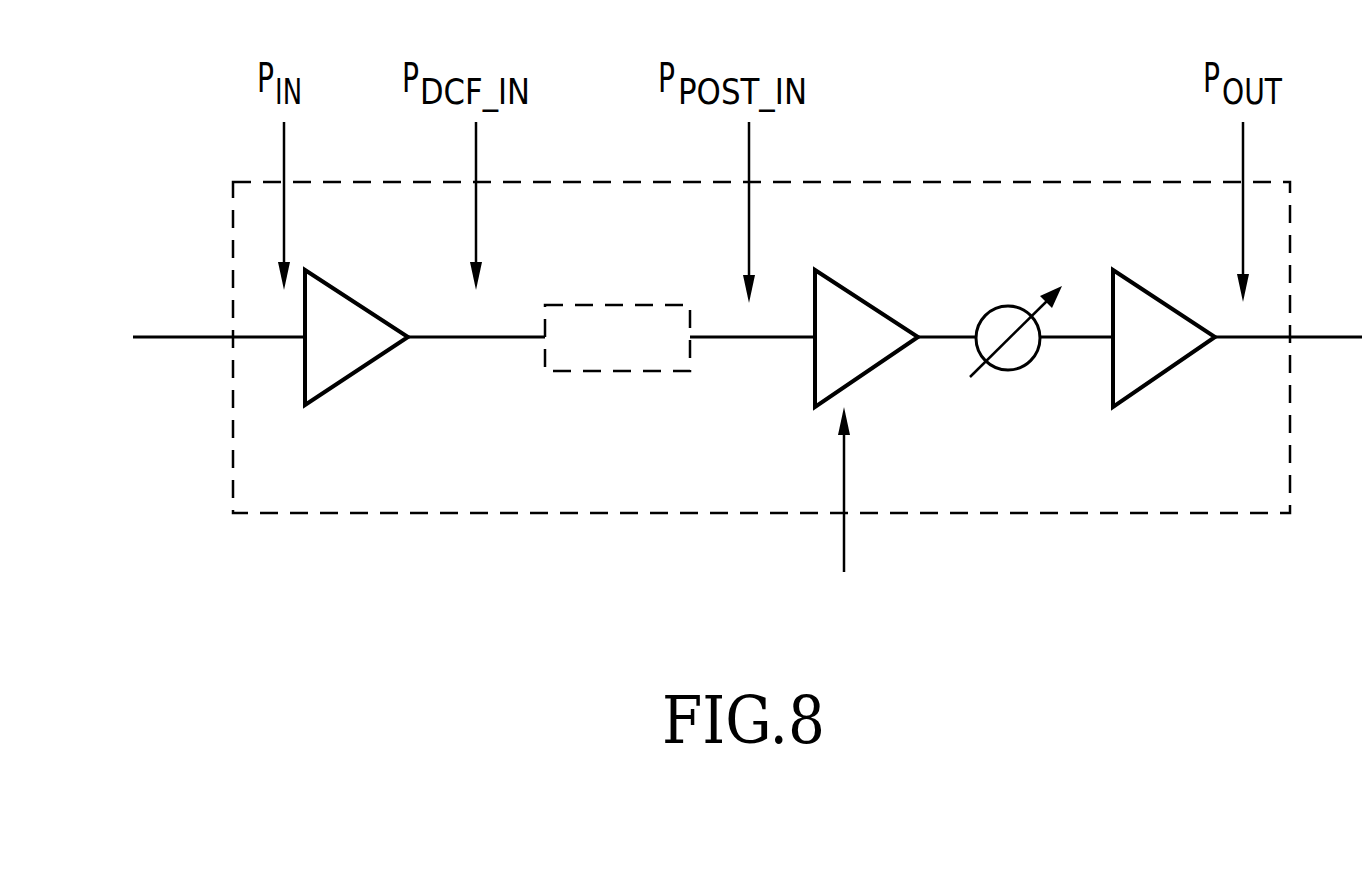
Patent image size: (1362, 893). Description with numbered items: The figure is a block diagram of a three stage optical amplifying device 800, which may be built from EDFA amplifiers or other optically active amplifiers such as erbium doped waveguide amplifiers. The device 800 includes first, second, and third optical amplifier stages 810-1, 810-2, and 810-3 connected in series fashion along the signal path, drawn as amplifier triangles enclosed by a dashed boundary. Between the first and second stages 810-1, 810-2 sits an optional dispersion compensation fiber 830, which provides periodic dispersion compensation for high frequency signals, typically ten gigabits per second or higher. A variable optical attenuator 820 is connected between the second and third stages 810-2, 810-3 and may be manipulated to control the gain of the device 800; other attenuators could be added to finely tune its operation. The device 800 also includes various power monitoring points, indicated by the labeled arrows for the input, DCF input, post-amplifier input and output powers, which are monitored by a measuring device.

The three stage optical amplifying device 800 is at (1028, 182).
The first optical amplifier stage 810-1 is at (305, 368).
The second optical amplifier stage 810-2 is at (815, 380).
The third optical amplifier stage 810-3 is at (1180, 368).
The variable optical attenuator 820 is at (990, 310).
The dispersion compensation fiber 830 is at (618, 303).